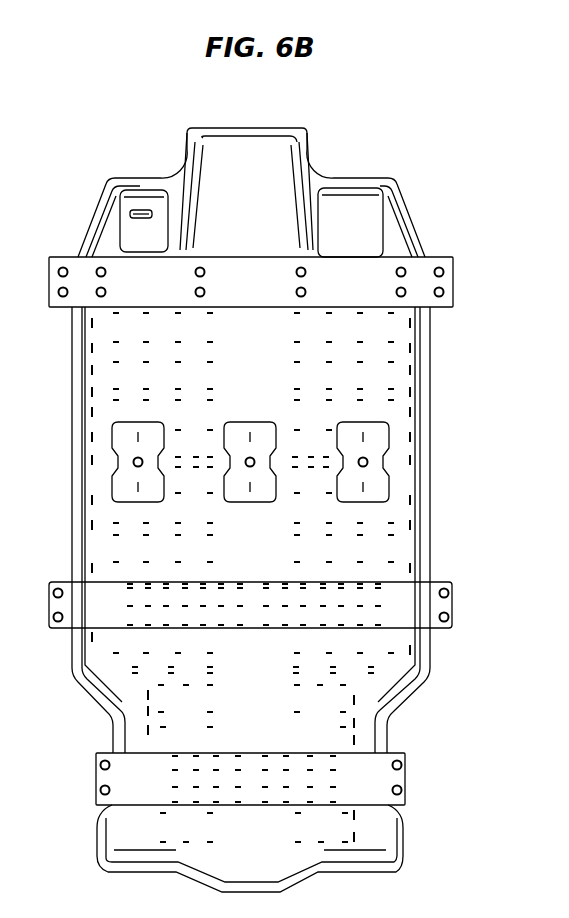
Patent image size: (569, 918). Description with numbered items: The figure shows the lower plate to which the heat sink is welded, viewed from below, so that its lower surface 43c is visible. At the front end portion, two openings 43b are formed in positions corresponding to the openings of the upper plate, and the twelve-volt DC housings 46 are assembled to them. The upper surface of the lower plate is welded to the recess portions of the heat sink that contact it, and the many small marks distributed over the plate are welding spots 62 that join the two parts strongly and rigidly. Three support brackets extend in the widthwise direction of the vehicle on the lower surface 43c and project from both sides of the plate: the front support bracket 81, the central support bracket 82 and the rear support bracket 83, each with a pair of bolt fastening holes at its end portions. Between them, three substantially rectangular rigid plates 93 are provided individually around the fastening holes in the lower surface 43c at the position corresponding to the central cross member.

The opening 43b is at (150, 193).
The lower surface 43c is at (363, 415).
The 12V DC housing 46 is at (137, 237).
The welding spot 62 is at (144, 537).
The front support bracket 81 is at (445, 285).
The central support bracket 82 is at (444, 606).
The rear support bracket 83 is at (396, 782).
The rigid plate 93 is at (147, 490).